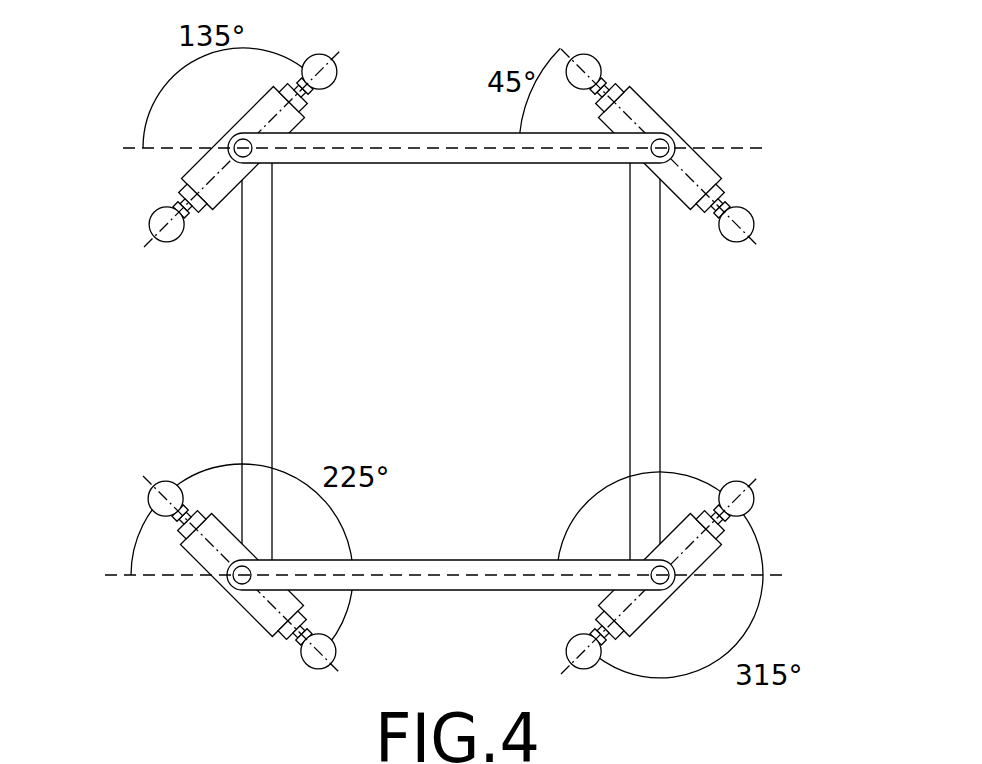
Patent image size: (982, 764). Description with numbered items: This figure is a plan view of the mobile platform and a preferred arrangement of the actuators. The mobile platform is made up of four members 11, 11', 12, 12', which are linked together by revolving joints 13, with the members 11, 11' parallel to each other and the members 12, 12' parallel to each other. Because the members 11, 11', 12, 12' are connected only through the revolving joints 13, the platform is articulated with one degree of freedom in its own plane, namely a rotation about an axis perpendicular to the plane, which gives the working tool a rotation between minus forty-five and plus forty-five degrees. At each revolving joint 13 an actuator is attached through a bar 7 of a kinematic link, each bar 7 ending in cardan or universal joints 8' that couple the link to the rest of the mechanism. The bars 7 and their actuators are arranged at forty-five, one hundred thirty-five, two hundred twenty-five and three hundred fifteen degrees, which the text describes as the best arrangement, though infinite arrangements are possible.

The bar 7 is at (727, 207).
The cardan or universal joint 8' is at (782, 202).
The member 11 is at (715, 361).
The member 11' is at (192, 361).
The member 12 is at (451, 88).
The member 12' is at (451, 620).
The revolving joint 13 is at (675, 560).